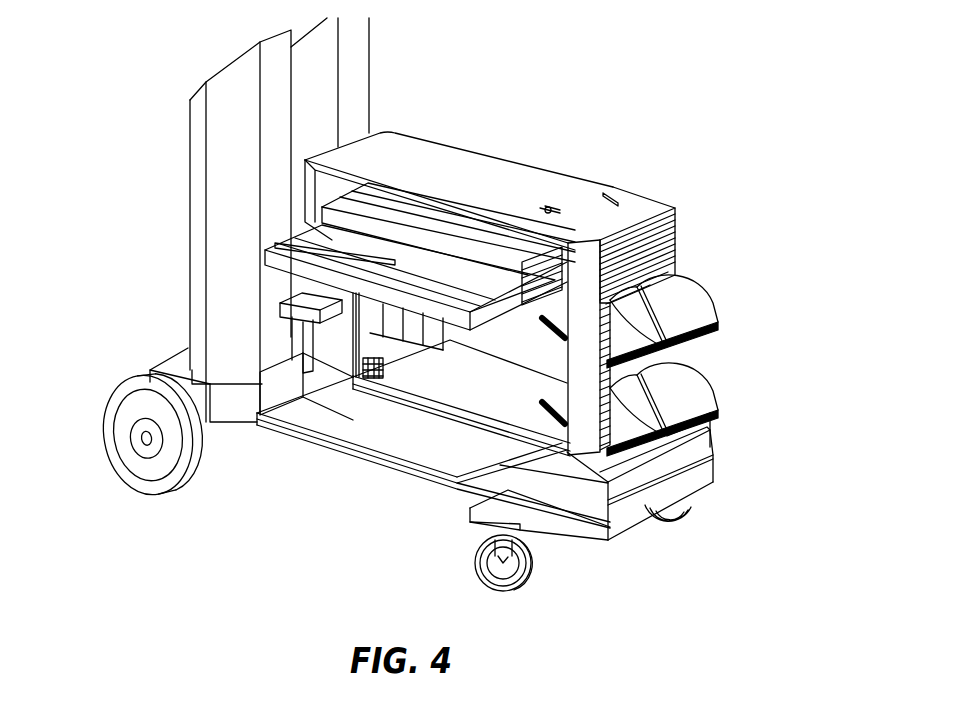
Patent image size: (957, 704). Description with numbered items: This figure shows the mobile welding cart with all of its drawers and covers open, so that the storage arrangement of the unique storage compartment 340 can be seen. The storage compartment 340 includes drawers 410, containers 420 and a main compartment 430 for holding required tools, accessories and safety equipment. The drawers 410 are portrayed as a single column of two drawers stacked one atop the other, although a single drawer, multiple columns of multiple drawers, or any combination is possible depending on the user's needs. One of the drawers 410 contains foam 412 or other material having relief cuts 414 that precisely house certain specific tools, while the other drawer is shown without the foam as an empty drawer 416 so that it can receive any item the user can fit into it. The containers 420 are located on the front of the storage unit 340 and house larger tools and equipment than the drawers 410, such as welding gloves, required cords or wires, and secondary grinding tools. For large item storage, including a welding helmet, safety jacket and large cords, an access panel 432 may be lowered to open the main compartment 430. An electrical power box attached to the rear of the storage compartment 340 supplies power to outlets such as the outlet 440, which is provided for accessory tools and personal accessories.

The storage compartment 340 is at (630, 203).
The drawers 410 is at (277, 258).
The foam 412 is at (318, 245).
The relief cuts 414 is at (457, 230).
The empty drawer without foam 416 is at (383, 210).
The containers 420 is at (693, 313).
The main compartment 430 is at (517, 388).
The access panel 432 is at (373, 432).
The outlet 440 is at (335, 335).